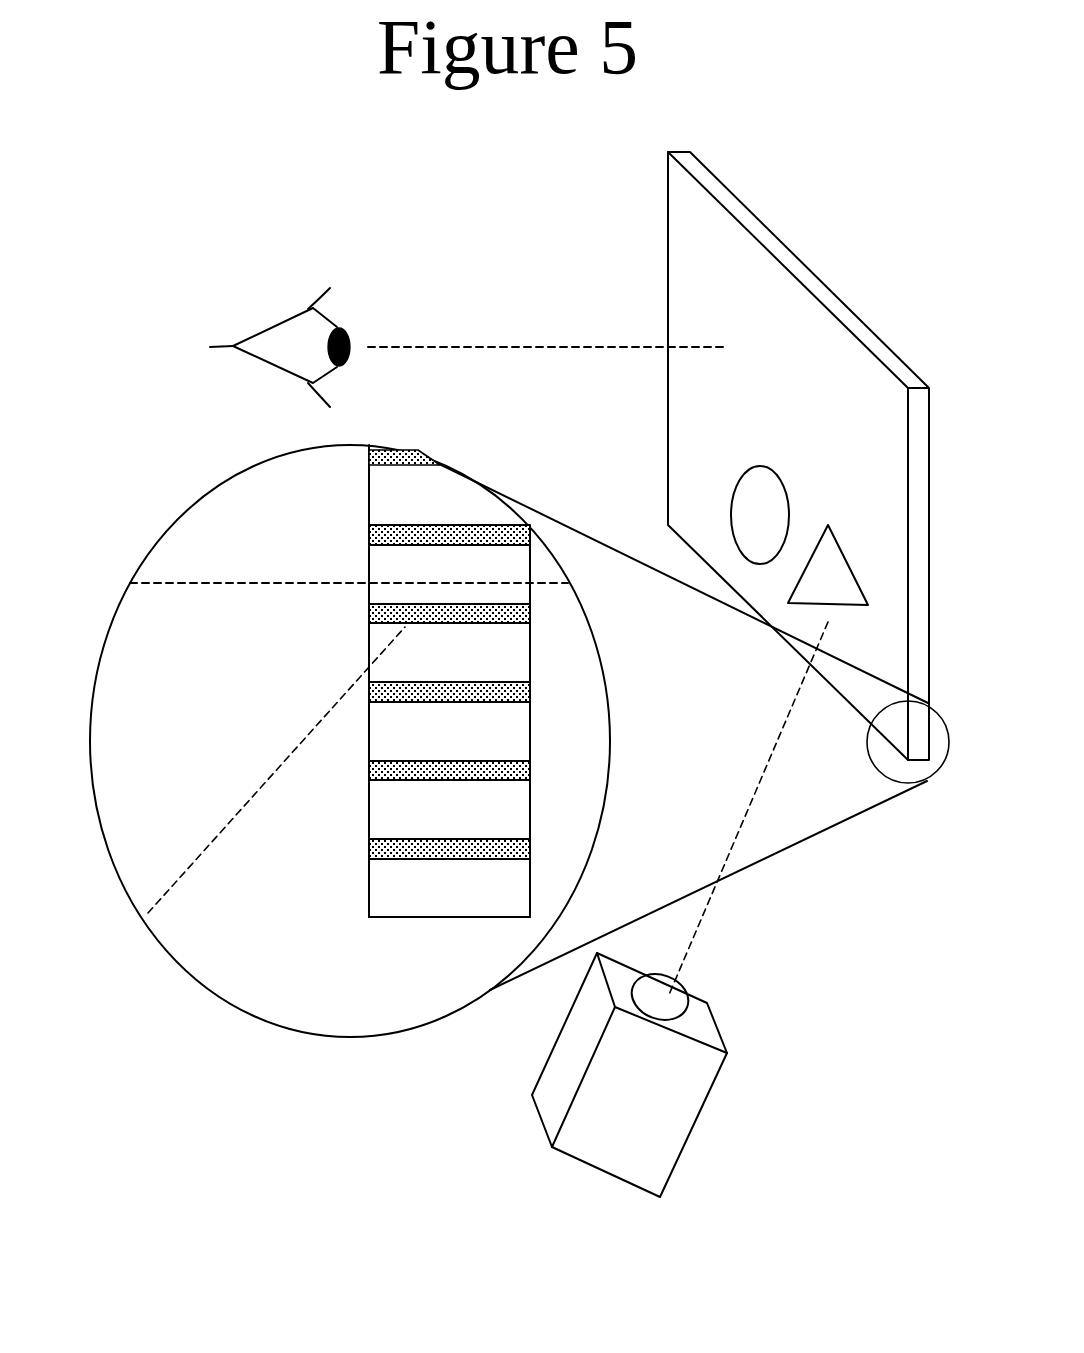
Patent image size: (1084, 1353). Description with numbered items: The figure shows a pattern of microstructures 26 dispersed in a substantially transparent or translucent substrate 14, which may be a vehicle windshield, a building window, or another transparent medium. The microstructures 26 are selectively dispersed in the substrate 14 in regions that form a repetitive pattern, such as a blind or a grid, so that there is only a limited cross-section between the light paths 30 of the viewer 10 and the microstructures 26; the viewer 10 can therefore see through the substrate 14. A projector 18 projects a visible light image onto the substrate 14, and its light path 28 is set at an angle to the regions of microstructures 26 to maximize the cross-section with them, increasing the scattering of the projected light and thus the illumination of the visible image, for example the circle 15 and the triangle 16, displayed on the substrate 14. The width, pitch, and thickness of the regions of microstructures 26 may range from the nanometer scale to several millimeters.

The viewer 10 is at (330, 307).
The substrate 14 is at (788, 247).
The circle 15 is at (747, 505).
The triangle 16 is at (828, 583).
The projector 18 is at (610, 1153).
The microstructures 26 is at (408, 702).
The light path 28 is at (707, 918).
The light paths 30 is at (530, 346).